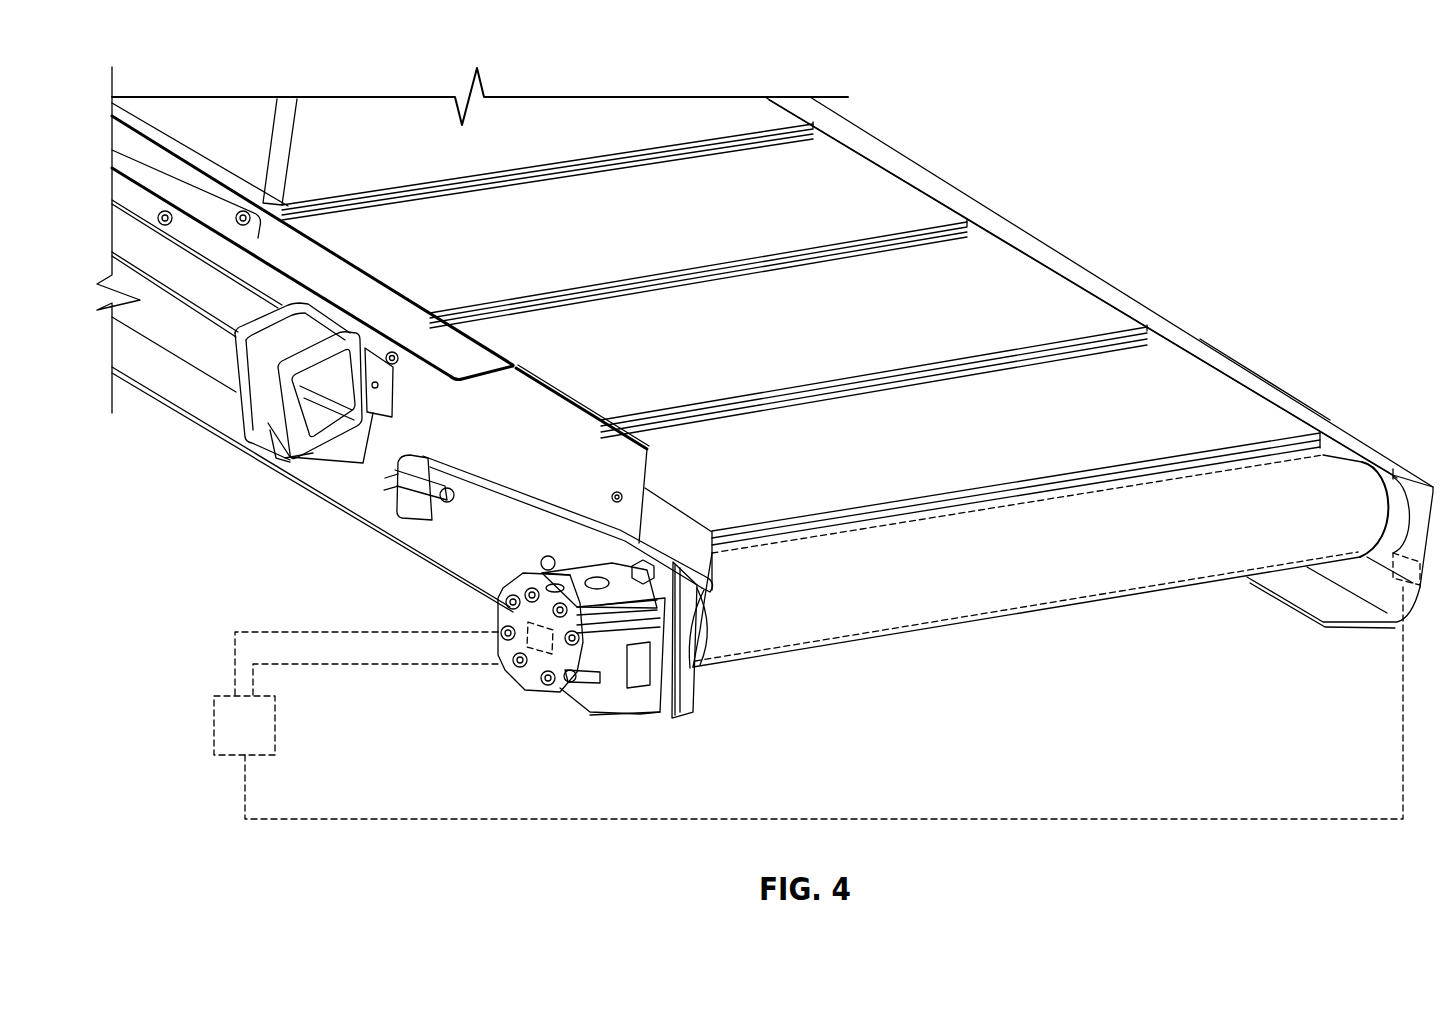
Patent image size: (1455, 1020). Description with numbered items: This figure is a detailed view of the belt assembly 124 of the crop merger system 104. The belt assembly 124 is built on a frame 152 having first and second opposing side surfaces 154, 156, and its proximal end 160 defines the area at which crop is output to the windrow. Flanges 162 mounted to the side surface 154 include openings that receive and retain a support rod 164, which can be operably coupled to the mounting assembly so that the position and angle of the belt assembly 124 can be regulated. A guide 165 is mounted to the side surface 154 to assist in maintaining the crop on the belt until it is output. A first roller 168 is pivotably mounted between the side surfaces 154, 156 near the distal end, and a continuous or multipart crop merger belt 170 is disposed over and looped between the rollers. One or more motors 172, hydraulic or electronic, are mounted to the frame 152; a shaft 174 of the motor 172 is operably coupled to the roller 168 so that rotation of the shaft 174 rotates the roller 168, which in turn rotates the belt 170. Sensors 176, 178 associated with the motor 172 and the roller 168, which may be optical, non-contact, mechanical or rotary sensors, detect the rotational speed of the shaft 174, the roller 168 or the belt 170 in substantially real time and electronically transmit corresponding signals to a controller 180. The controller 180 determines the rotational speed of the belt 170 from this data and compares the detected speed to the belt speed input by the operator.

The crop merger system 104 is at (713, 65).
The belt assembly 124 is at (1110, 265).
The frame 152 is at (367, 483).
The first side surface 154 is at (447, 547).
The second side surface 156 is at (1267, 378).
The proximal end 160 is at (1073, 636).
The flange 162 is at (312, 457).
The support rod 164 is at (193, 345).
The guide 165 is at (203, 112).
The first roller 168 is at (1145, 570).
The crop merger belt 170 is at (842, 193).
The motor 172 is at (542, 670).
The shaft 174 is at (670, 707).
The sensor 176 is at (557, 690).
The sensor 178 is at (1417, 577).
The controller 180 is at (273, 733).